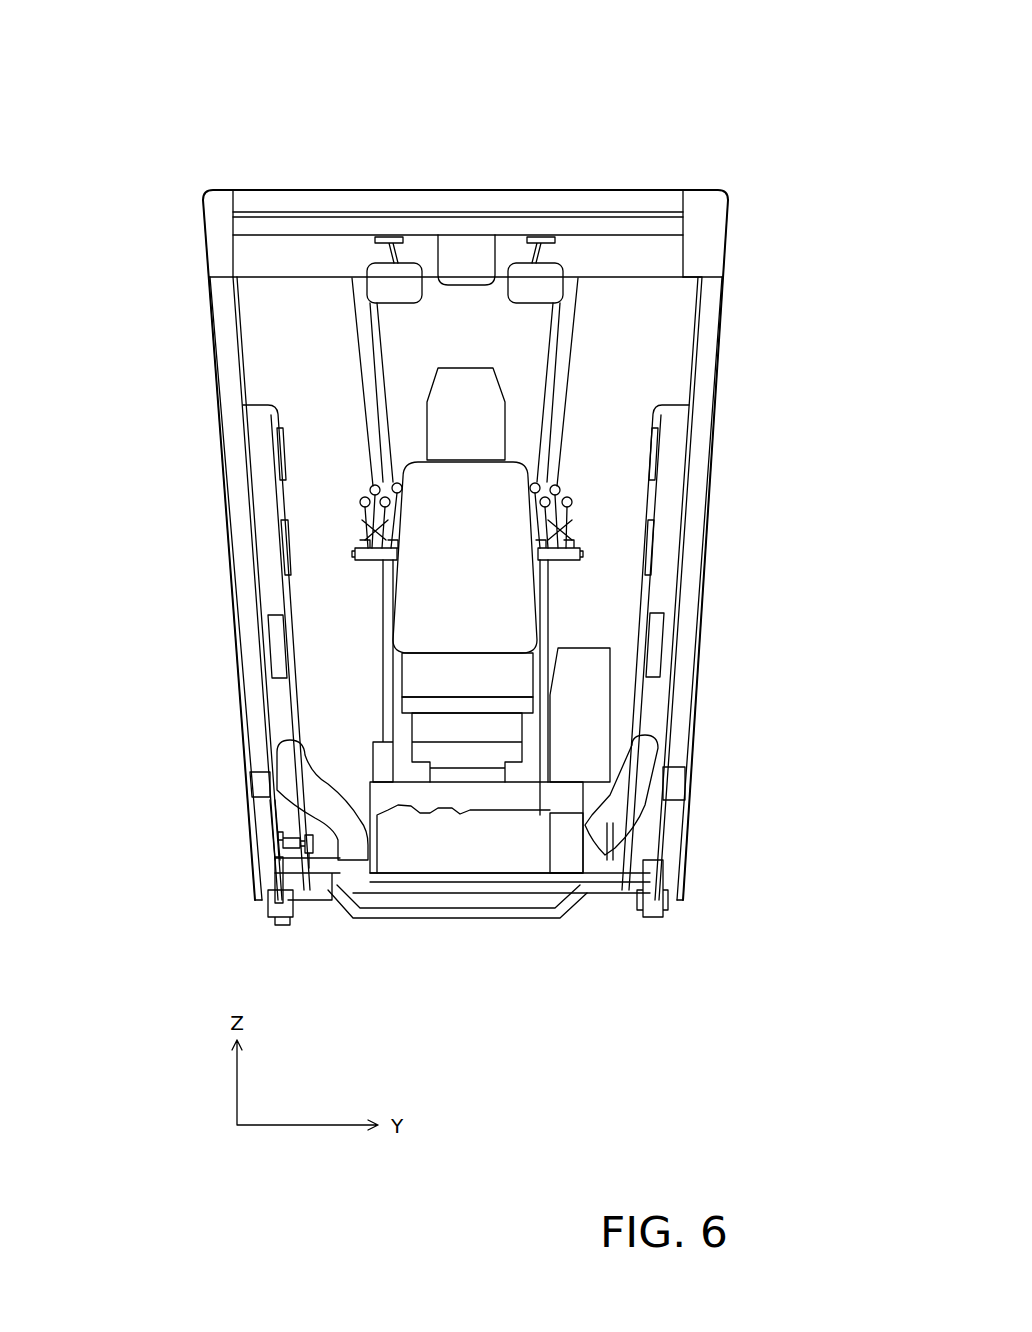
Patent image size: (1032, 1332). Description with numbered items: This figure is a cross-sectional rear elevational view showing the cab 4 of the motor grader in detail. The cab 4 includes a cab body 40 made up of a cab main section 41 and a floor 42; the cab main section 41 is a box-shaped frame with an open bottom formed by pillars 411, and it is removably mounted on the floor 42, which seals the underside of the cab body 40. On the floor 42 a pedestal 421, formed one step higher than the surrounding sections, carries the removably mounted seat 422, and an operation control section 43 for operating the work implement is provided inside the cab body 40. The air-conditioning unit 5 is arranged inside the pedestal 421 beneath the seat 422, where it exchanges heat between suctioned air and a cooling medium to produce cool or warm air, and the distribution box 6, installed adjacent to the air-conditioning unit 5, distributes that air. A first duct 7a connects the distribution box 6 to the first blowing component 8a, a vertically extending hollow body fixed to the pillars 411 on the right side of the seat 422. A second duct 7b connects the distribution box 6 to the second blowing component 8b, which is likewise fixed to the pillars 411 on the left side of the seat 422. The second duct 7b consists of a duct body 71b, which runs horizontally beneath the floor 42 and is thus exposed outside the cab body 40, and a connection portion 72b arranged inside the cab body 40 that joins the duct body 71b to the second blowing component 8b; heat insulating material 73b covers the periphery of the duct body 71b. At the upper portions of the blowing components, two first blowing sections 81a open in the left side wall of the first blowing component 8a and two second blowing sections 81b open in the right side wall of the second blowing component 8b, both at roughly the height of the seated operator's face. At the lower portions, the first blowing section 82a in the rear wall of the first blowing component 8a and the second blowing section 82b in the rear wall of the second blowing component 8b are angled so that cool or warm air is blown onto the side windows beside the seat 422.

The cab 4 is at (658, 96).
The cab body 40 is at (737, 188).
The cab main section 41 is at (727, 300).
The pillars 411 is at (237, 355).
The operation control section 43 is at (538, 482).
The first blowing component 8a is at (680, 430).
The second blowing component 8b is at (268, 447).
The first blowing sections 81a is at (650, 540).
The second blowing sections 81b is at (283, 543).
The first blowing section 82a is at (658, 648).
The second blowing section 82b is at (277, 647).
The seat 422 is at (517, 613).
The pedestal 421 is at (525, 778).
The first duct 7a is at (630, 817).
The second duct 7b is at (336, 913).
The connection portion 72b is at (325, 808).
The duct body 71b is at (400, 905).
The heat insulating material 73b is at (455, 925).
The air-conditioning unit 5 is at (487, 850).
The distribution box 6 is at (568, 858).
The floor 42 is at (622, 893).